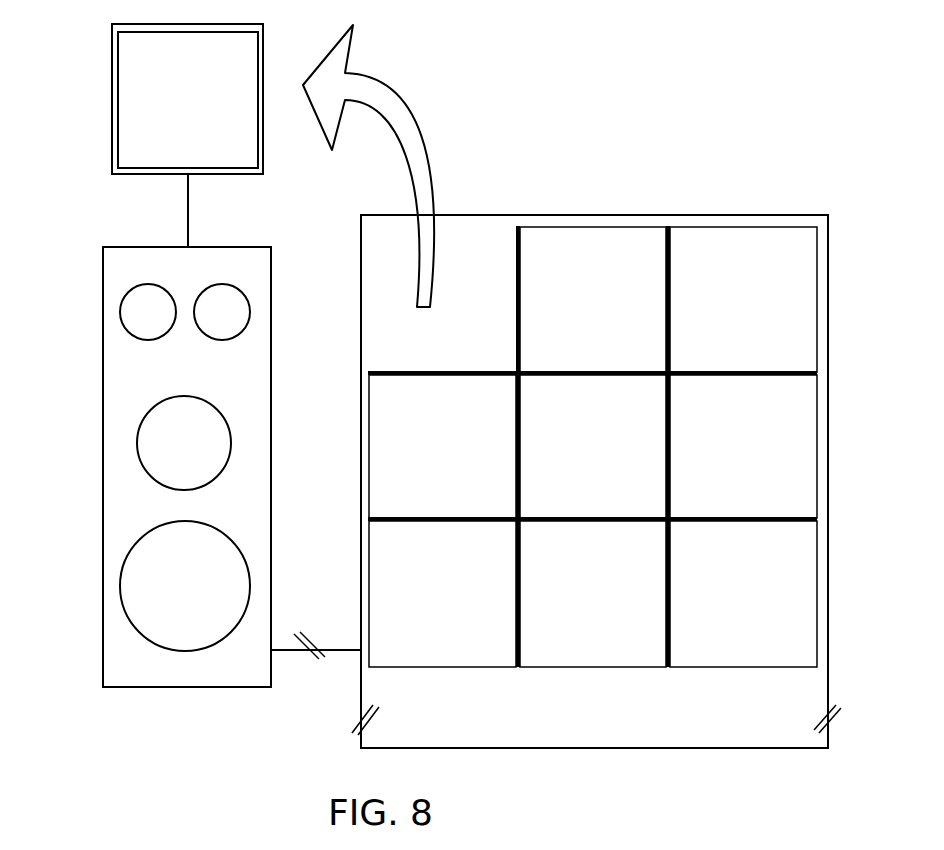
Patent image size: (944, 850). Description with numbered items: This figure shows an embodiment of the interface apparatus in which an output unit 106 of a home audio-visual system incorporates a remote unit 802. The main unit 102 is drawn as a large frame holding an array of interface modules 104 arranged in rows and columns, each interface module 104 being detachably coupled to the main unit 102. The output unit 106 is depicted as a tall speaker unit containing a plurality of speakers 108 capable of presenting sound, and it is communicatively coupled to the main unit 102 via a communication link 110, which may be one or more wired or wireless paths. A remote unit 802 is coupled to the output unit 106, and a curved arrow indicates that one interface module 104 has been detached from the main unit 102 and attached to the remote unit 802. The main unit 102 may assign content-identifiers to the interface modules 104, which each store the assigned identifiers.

The main unit 102 is at (828, 660).
The interface module 104 is at (170, 95).
The output unit 106 is at (103, 342).
The speakers 108 is at (134, 320).
The communication link 110 is at (350, 648).
The remote unit 802 is at (263, 30).